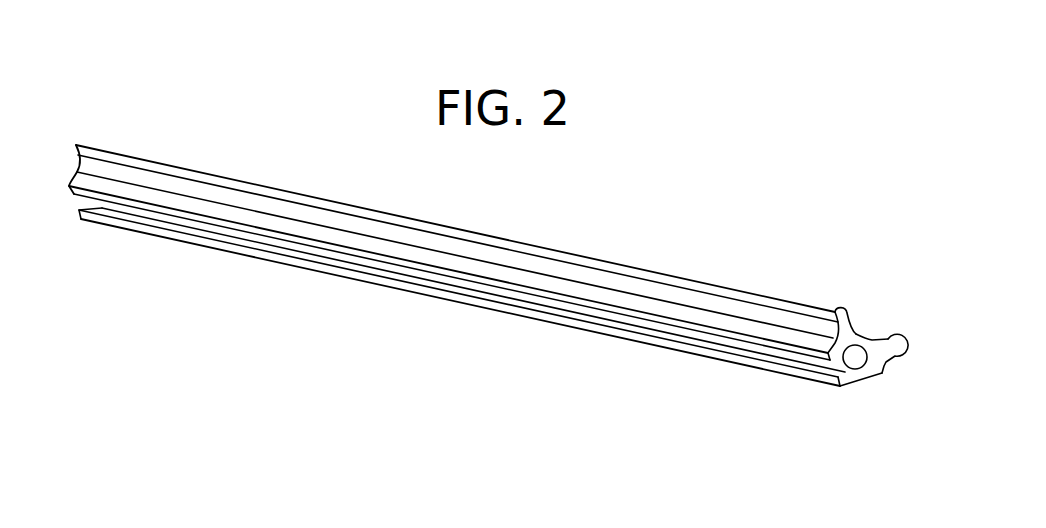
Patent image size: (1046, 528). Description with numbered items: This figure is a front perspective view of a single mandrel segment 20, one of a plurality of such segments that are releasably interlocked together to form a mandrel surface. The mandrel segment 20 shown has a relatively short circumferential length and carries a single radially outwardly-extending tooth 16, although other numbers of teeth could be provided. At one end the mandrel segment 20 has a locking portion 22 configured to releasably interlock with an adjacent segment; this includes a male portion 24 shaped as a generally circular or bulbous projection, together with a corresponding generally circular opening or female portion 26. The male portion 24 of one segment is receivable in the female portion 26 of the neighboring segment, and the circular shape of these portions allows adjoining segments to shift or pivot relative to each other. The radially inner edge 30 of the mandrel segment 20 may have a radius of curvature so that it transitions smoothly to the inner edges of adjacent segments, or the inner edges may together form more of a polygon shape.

The mandrel segment 20 is at (703, 268).
The tooth 16 is at (842, 317).
The male portion 24 is at (876, 336).
The locking portion 22 is at (907, 334).
The female portion 26 is at (862, 361).
The radially inner edge 30 is at (869, 379).